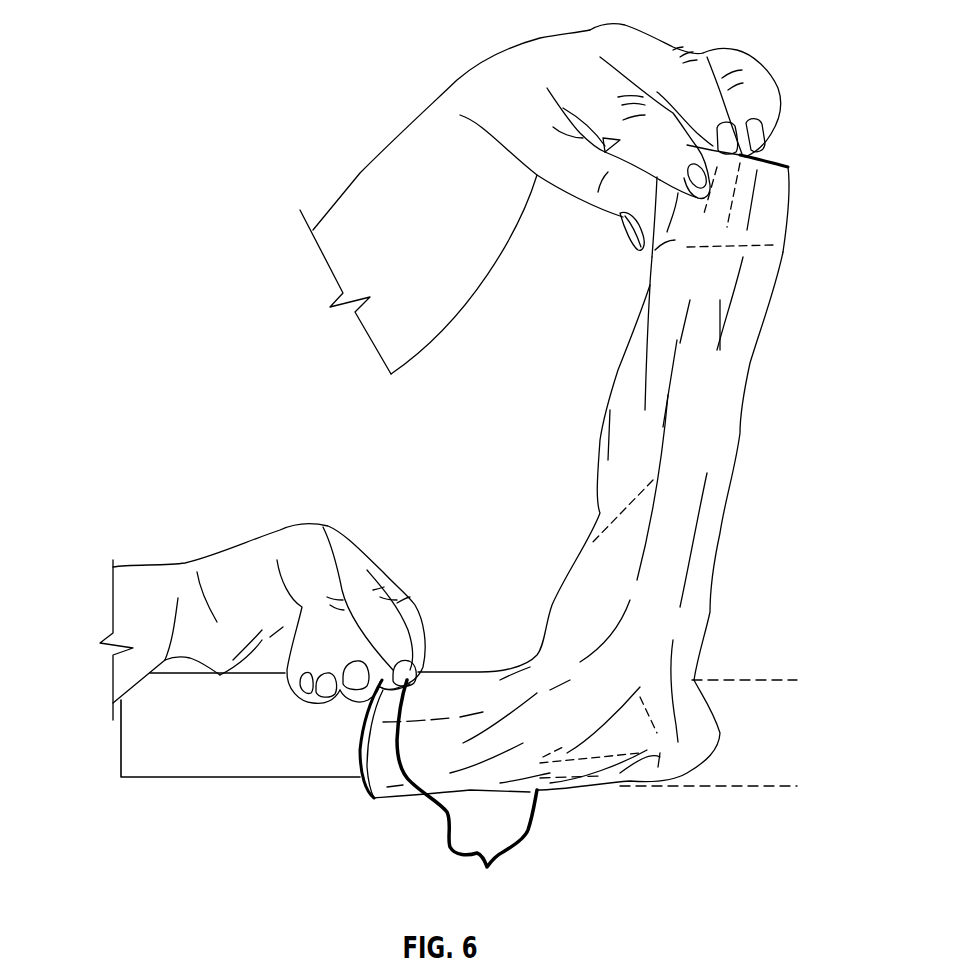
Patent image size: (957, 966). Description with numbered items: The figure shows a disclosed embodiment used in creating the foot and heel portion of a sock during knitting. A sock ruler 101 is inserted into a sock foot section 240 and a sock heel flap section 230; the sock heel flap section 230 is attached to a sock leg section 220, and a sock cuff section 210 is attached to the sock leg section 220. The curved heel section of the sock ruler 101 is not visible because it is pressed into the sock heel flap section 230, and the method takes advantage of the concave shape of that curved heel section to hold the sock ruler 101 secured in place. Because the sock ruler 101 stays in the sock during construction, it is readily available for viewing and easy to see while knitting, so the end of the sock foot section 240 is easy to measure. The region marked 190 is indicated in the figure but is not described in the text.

The sock ruler 101 is at (233, 778).
The substrate thickness region 190 is at (98, 680).
The sock cuff section 210 is at (795, 156).
The sock leg section 220 is at (799, 260).
The sock heel flap section 230 is at (793, 680).
The sock foot section 240 is at (530, 833).